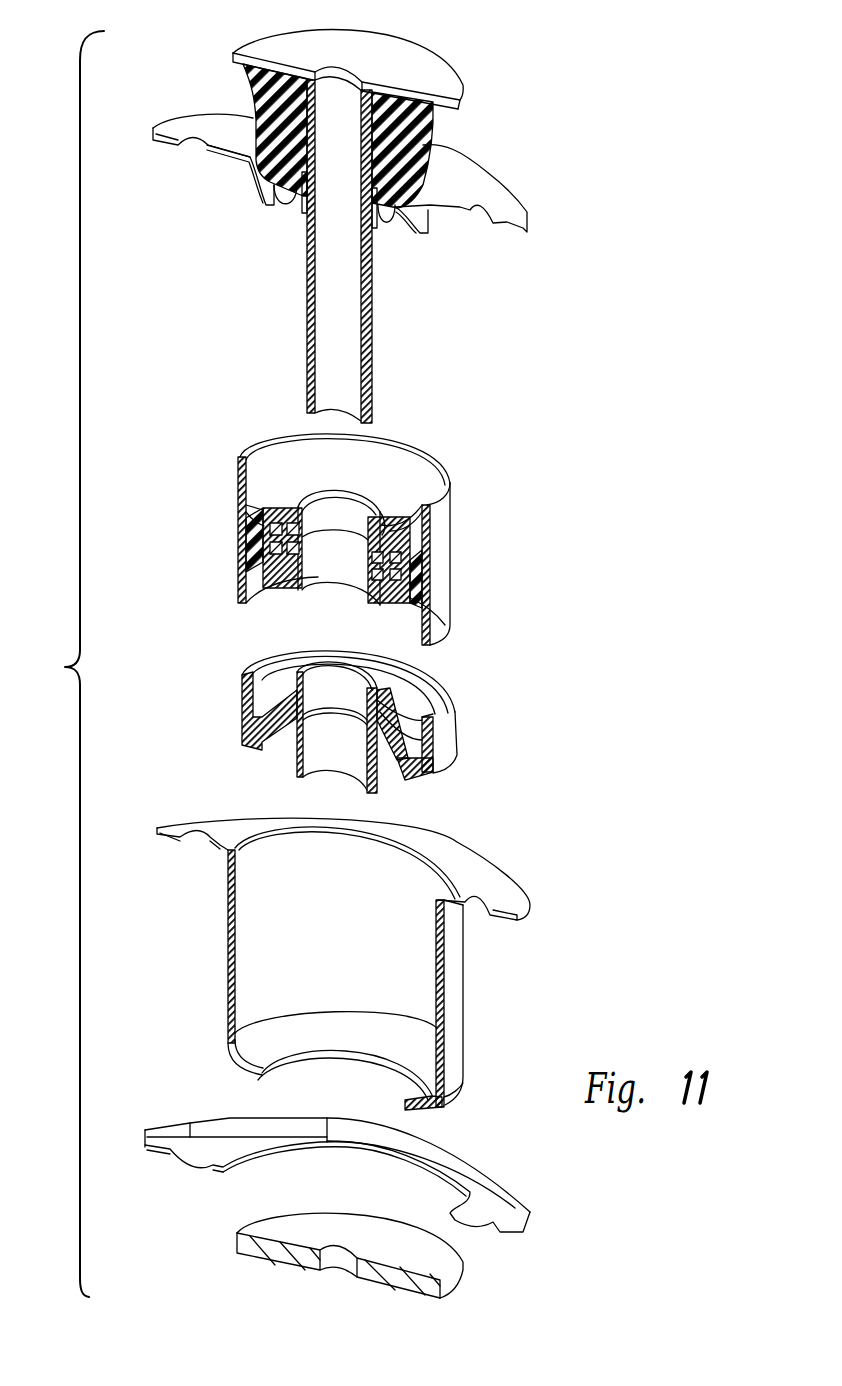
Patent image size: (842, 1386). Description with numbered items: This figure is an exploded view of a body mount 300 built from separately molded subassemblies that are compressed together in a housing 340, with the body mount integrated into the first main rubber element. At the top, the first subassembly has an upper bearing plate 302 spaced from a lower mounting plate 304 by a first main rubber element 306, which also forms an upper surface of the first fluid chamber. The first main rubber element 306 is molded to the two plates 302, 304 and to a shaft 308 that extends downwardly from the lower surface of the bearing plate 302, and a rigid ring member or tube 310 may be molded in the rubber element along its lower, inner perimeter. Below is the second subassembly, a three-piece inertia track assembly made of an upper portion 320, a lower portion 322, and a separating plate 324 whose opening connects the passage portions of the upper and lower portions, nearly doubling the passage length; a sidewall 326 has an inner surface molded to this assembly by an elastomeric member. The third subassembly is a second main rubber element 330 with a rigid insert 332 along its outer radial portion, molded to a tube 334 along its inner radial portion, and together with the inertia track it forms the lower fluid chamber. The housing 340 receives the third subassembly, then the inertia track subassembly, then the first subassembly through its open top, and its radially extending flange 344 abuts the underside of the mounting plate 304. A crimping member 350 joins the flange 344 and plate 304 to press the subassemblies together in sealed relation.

The body mount 300 is at (59, 664).
The bearing plate 302 is at (432, 72).
The mounting plate 304 is at (478, 187).
The first main rubber element 306 is at (248, 117).
The shaft 308 is at (306, 340).
The tube 310 is at (302, 195).
The upper portion 320 is at (342, 507).
The lower portion 322 is at (327, 568).
The separating plate 324 is at (242, 538).
The sidewall 326 is at (430, 617).
The second main rubber element 330 is at (452, 710).
The rigid insert 332 is at (440, 742).
The tube 334 is at (296, 755).
The housing 340 is at (452, 1005).
The flange 344 is at (483, 883).
The crimping member 350 is at (505, 1192).